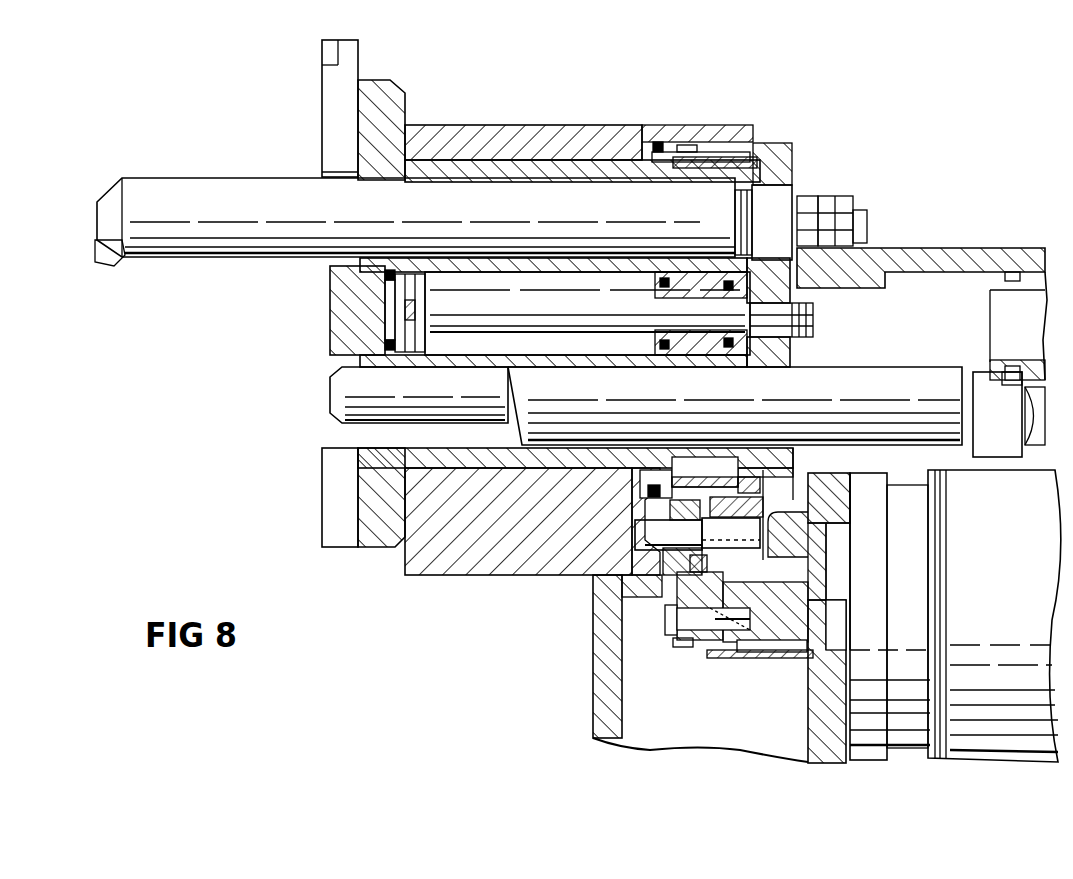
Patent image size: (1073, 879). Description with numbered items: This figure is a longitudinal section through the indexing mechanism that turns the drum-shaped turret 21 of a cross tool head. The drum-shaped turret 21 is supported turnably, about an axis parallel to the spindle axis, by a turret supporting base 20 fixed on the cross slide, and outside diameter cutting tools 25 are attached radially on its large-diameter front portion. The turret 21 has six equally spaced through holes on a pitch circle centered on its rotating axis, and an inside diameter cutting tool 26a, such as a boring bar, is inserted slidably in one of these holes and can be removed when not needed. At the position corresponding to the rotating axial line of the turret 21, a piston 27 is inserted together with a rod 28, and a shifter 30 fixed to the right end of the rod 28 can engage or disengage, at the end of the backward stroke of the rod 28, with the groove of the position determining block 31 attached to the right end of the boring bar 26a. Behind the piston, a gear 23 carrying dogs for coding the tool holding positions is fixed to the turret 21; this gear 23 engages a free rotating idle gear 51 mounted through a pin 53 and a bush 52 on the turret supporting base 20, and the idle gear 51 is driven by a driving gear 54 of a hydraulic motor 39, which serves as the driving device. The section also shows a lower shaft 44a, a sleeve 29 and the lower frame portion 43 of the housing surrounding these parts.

The turret supporting base 20 is at (508, 152).
The drum-shaped turret 21 is at (437, 158).
The gear 23 is at (690, 505).
The outside diameter cutting tools 25 is at (345, 78).
The inside diameter cutting tool 26a is at (415, 222).
The piston 27 is at (410, 297).
The rod 28 is at (619, 313).
The threaded sleeve 29 is at (745, 358).
The shifter 30 is at (908, 262).
The position determining block 31 is at (778, 205).
The hydraulic motor 39 is at (955, 616).
The lower frame 43 is at (595, 656).
The lower shaft 44a is at (535, 345).
The idle gear 51 is at (636, 520).
The bush 52 is at (640, 560).
The pin 53 is at (745, 531).
The driving gear 54 is at (682, 647).